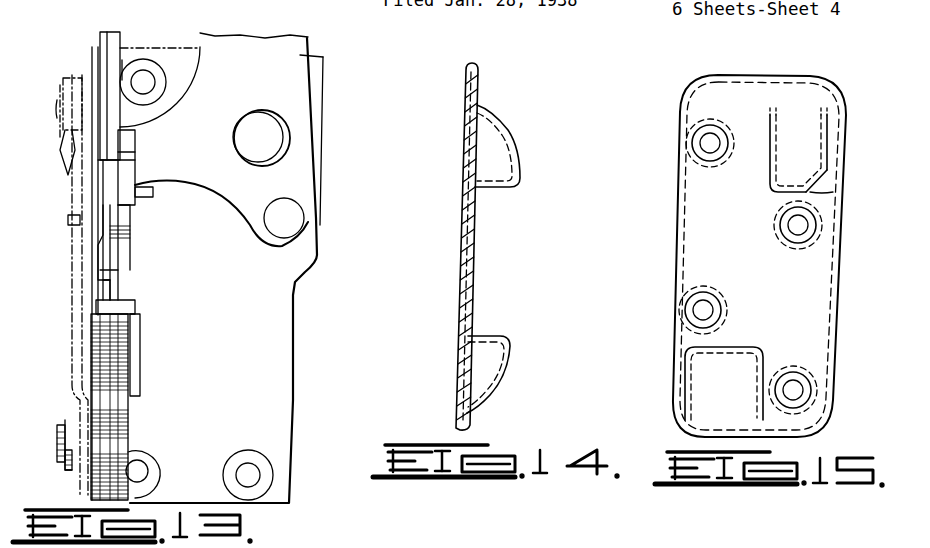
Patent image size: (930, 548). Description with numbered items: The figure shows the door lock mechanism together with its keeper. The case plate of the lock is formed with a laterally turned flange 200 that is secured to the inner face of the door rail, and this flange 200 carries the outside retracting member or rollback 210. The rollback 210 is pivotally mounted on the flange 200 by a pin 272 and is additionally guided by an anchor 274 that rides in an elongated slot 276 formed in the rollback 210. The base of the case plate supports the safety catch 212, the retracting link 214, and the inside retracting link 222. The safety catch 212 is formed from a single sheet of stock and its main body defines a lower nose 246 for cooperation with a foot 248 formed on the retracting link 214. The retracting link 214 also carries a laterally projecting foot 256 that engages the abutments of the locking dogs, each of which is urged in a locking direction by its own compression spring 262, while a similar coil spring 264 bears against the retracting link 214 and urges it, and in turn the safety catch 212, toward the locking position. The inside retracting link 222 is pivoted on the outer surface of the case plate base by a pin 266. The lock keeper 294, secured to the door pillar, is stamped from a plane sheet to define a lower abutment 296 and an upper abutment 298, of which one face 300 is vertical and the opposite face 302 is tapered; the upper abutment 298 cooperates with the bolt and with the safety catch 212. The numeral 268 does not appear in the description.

In FIG. 13, the laterally turned flange 200 is at (291, 381).
In FIG. 13, the outside retracting member or rollback 210 is at (293, 51).
In FIG. 13, the safety catch 212 is at (131, 241).
In FIG. 13, the retracting link 214 is at (108, 271).
In FIG. 13, the inside retracting link 222 is at (76, 350).
In FIG. 13, the lower nose 246 is at (128, 212).
In FIG. 13, the foot 248 is at (122, 183).
In FIG. 13, the laterally projecting foot 256 is at (125, 307).
In FIG. 13, the compression spring 262 is at (118, 425).
In FIG. 13, the coil spring 264 is at (121, 40).
In FIG. 13, the pin 266 is at (57, 458).
In FIG. 13, the latch 268 is at (68, 72).
In FIG. 13, the pin 272 is at (292, 213).
In FIG. 13, the anchor 274 is at (277, 146).
In FIG. 13, the elongated slot 276 is at (289, 129).
In FIG. 14, the lock keeper 294 is at (473, 300).
In FIG. 15, the lock keeper 294 is at (708, 258).
In FIG. 14, the lower abutment 296 is at (509, 380).
In FIG. 15, the lower abutment 296 is at (740, 357).
In FIG. 14, the upper abutment 298 is at (521, 155).
In FIG. 15, the upper abutment 298 is at (785, 176).
In FIG. 15, the vertical face 300 is at (768, 157).
In FIG. 15, the tapered face 302 is at (833, 192).